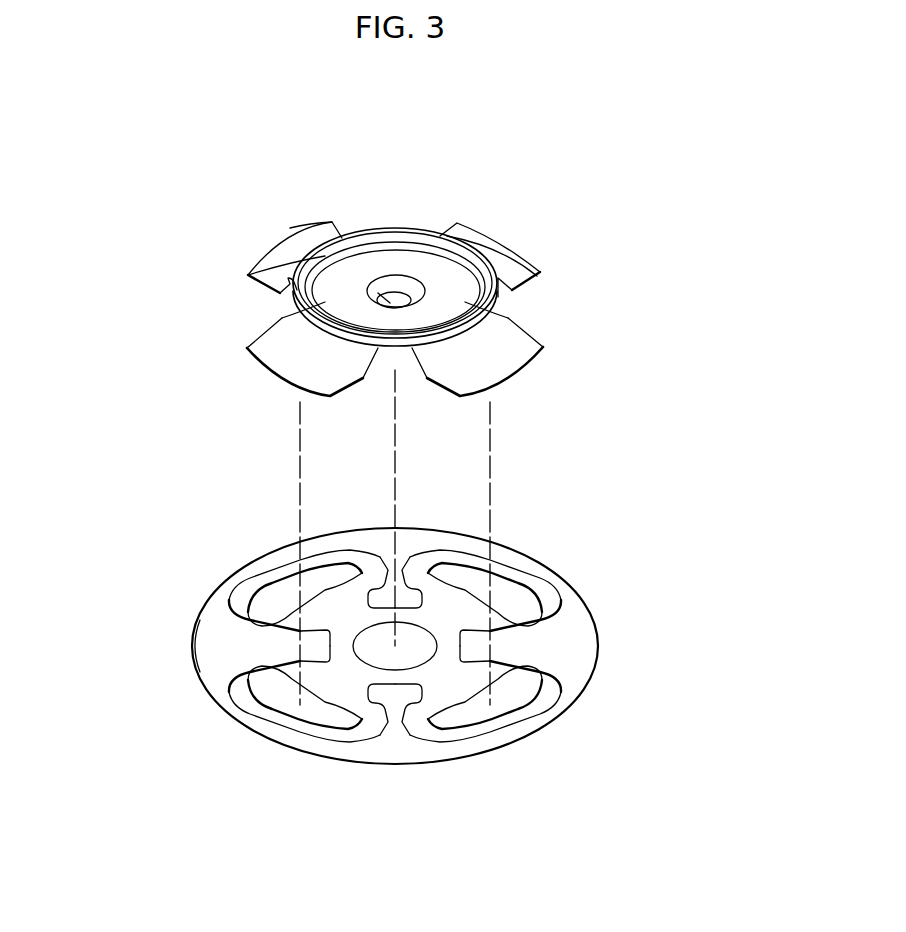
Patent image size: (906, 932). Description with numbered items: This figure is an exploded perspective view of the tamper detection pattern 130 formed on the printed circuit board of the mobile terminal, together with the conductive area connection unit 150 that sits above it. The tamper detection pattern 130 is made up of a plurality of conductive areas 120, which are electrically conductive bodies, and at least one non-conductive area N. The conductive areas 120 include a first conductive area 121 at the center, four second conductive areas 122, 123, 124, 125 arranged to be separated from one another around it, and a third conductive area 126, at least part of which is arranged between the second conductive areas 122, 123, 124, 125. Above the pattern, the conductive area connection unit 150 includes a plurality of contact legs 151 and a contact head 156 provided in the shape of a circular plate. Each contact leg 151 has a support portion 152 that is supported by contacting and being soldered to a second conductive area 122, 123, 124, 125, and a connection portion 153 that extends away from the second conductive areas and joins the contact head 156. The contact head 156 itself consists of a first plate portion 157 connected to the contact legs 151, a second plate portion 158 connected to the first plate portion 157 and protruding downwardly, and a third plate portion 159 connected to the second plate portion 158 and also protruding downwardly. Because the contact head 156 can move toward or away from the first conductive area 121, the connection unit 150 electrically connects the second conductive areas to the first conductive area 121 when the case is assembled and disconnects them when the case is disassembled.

The conductive area connection unit 150 is at (443, 173).
The contact legs 151 is at (618, 318).
The support portion 152 is at (507, 363).
The connection portion 153 is at (485, 329).
The contact head 156 is at (168, 222).
The first plate portion 157 is at (295, 228).
The second plate portion 158 is at (248, 275).
The third plate portion 159 is at (367, 280).
The conductive areas 120 is at (363, 887).
The first conductive area 121 is at (402, 662).
The second conductive area 122 is at (315, 708).
The second conductive area 123 is at (278, 607).
The second conductive area 124 is at (516, 600).
The second conductive area 125 is at (513, 693).
The third conductive area 126 is at (223, 646).
The tamper detection pattern 130 is at (609, 636).
The non-conductive area N is at (436, 556).